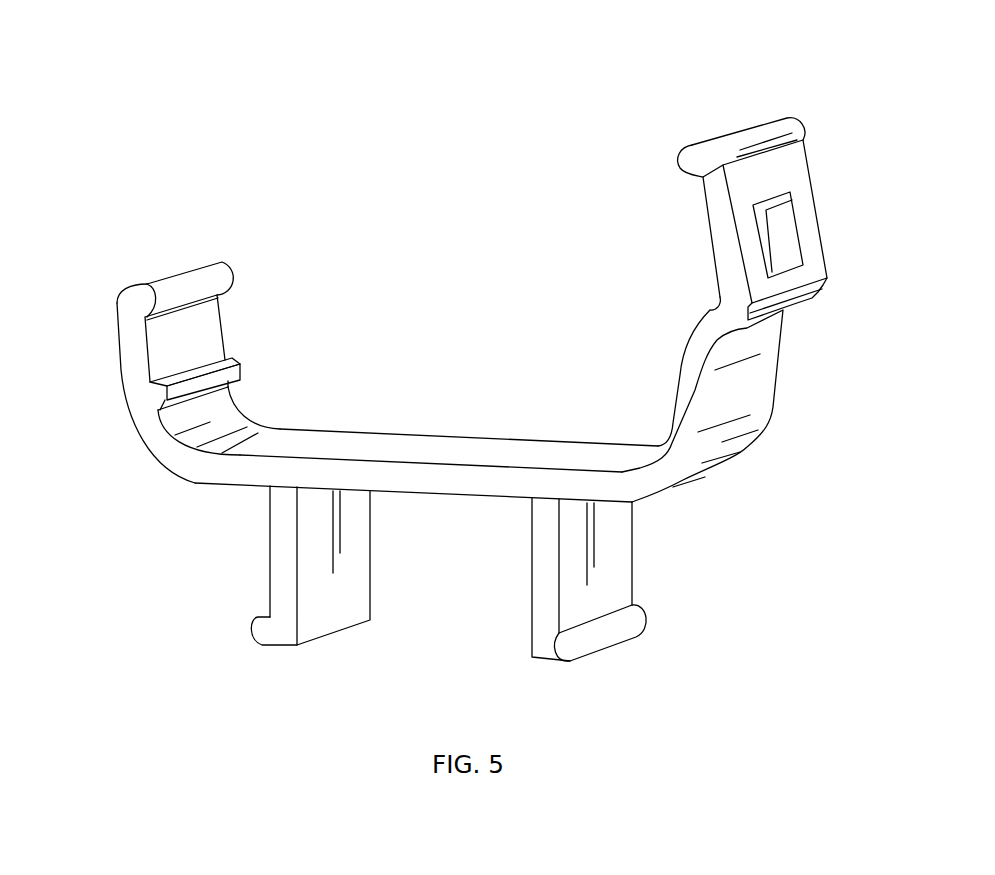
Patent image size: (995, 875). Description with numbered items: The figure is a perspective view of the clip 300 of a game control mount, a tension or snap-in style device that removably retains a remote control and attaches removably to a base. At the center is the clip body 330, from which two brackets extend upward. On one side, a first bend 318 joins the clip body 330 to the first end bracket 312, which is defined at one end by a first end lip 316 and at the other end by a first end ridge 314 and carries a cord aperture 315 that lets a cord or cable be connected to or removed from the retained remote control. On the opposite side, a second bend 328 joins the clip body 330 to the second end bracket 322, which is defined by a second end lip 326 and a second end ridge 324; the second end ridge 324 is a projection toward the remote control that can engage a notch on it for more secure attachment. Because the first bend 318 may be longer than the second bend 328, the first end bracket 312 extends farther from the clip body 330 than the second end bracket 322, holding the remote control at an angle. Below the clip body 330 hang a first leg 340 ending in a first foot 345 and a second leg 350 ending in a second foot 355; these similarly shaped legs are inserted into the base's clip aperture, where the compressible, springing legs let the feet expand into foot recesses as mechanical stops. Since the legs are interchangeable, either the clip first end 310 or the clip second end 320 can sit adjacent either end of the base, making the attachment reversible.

The clip 300 is at (156, 116).
The clip first end 310 is at (712, 187).
The first end bracket 312 is at (797, 103).
The first end ridge 314 is at (712, 302).
The cord aperture 315 is at (786, 240).
The first end lip 316 is at (687, 158).
The first bend 318 is at (737, 388).
The clip second end 320 is at (202, 333).
The second end bracket 322 is at (102, 293).
The second end ridge 324 is at (230, 370).
The second end lip 326 is at (220, 273).
The second bend 328 is at (162, 450).
The clip body 330 is at (447, 443).
The first leg 340 is at (613, 568).
The first foot 345 is at (640, 623).
The second leg 350 is at (282, 560).
The second foot 355 is at (260, 628).